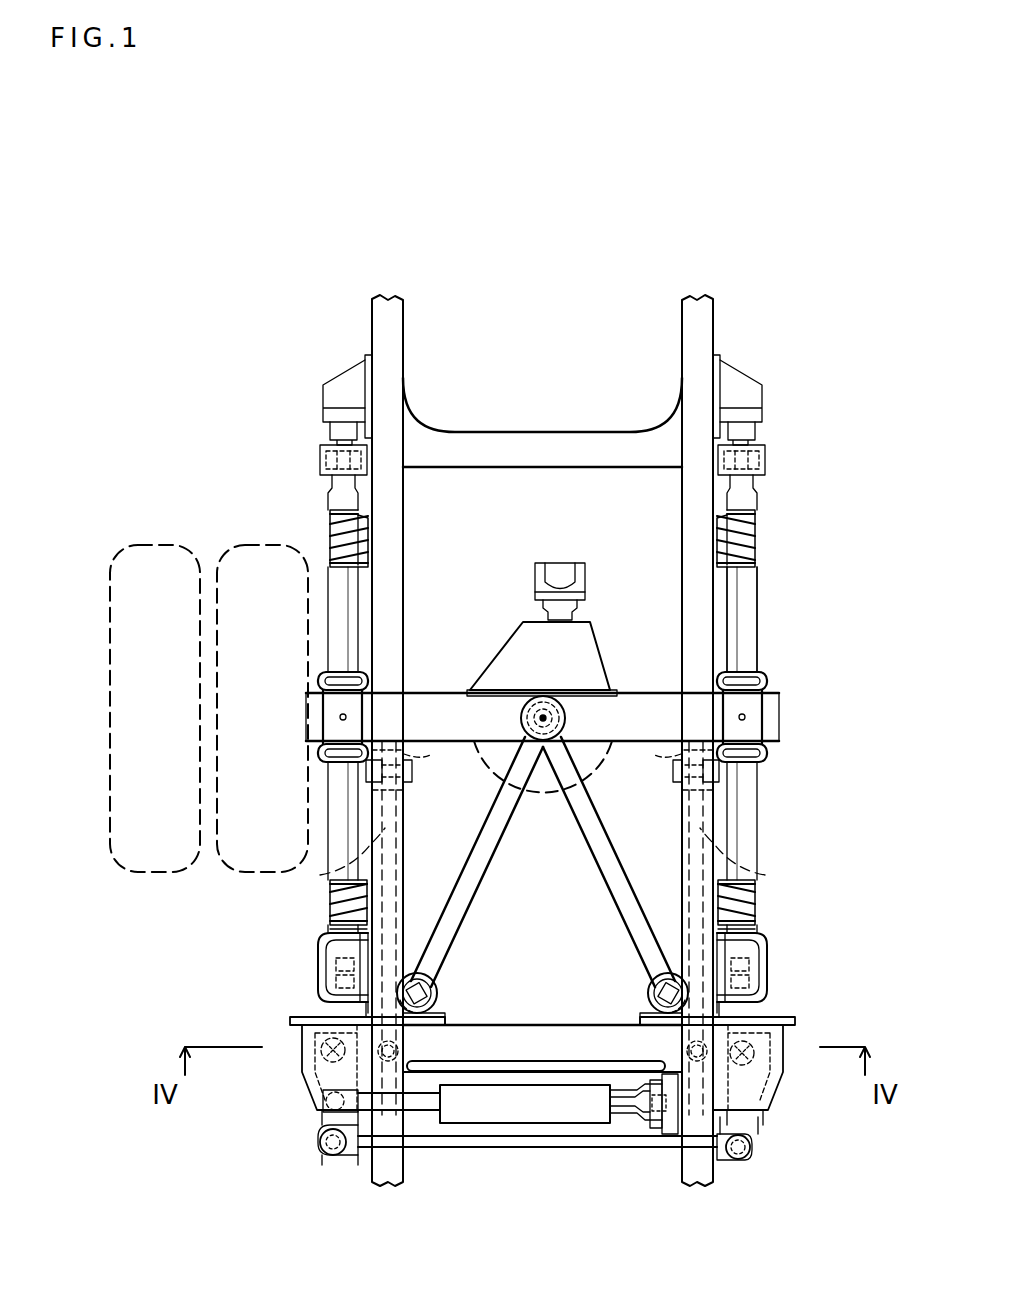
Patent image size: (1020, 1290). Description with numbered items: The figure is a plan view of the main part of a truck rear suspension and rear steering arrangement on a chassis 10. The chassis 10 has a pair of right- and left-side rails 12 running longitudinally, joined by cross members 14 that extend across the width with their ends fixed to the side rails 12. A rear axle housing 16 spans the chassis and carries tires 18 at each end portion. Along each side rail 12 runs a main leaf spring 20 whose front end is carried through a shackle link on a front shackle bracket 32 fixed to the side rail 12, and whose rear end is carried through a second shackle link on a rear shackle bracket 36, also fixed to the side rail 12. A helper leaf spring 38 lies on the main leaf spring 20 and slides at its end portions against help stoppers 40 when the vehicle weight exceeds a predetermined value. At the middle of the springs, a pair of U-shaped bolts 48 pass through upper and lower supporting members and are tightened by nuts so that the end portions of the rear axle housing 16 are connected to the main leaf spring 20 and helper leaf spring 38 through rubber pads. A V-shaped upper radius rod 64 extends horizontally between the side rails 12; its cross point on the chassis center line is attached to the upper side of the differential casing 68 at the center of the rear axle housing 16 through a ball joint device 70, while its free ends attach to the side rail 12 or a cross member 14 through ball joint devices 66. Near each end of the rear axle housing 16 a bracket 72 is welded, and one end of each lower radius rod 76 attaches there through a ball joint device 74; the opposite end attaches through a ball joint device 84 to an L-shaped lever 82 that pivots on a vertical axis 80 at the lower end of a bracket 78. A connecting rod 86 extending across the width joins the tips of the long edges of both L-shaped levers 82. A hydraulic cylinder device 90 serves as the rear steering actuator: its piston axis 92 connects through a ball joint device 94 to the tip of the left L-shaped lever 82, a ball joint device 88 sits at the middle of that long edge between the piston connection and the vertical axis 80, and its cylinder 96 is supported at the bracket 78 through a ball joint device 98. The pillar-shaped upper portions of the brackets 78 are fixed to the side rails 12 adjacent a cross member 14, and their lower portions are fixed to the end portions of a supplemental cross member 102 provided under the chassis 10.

The chassis 10 is at (553, 283).
The side rail 12 is at (390, 312).
The cross member 14 is at (545, 452).
The rear axle housing 16 is at (645, 718).
The tire 18 is at (246, 556).
The main leaf spring 20 is at (762, 500).
The front shackle bracket 32 is at (738, 398).
The rear shackle bracket 36 is at (767, 985).
The helper leaf spring 38 is at (750, 577).
The help stopper 40 is at (752, 540).
The U-shaped bolt 48 is at (758, 680).
The upper radius rod 64 is at (488, 862).
The ball joint device 66 is at (518, 694).
The differential casing 68 is at (545, 790).
The ball joint device 70 is at (432, 990).
The bracket 72 is at (402, 788).
The ball joint device 74 is at (405, 760).
The lower radius rod 76 is at (318, 878).
The bracket 78 is at (302, 1042).
The vertical axis 80 is at (328, 1055).
The L-shaped lever 82 is at (318, 1135).
The ball joint device 84 is at (455, 1040).
The connecting rod 86 is at (545, 1148).
The ball joint device 88 is at (333, 1160).
The hydraulic cylinder device 90 is at (580, 1122).
The piston axis 92 is at (412, 1112).
The ball joint device 94 is at (323, 1100).
The cylinder 96 is at (502, 1123).
The ball joint device 98 is at (668, 1134).
The supplemental cross member 102 is at (555, 1060).